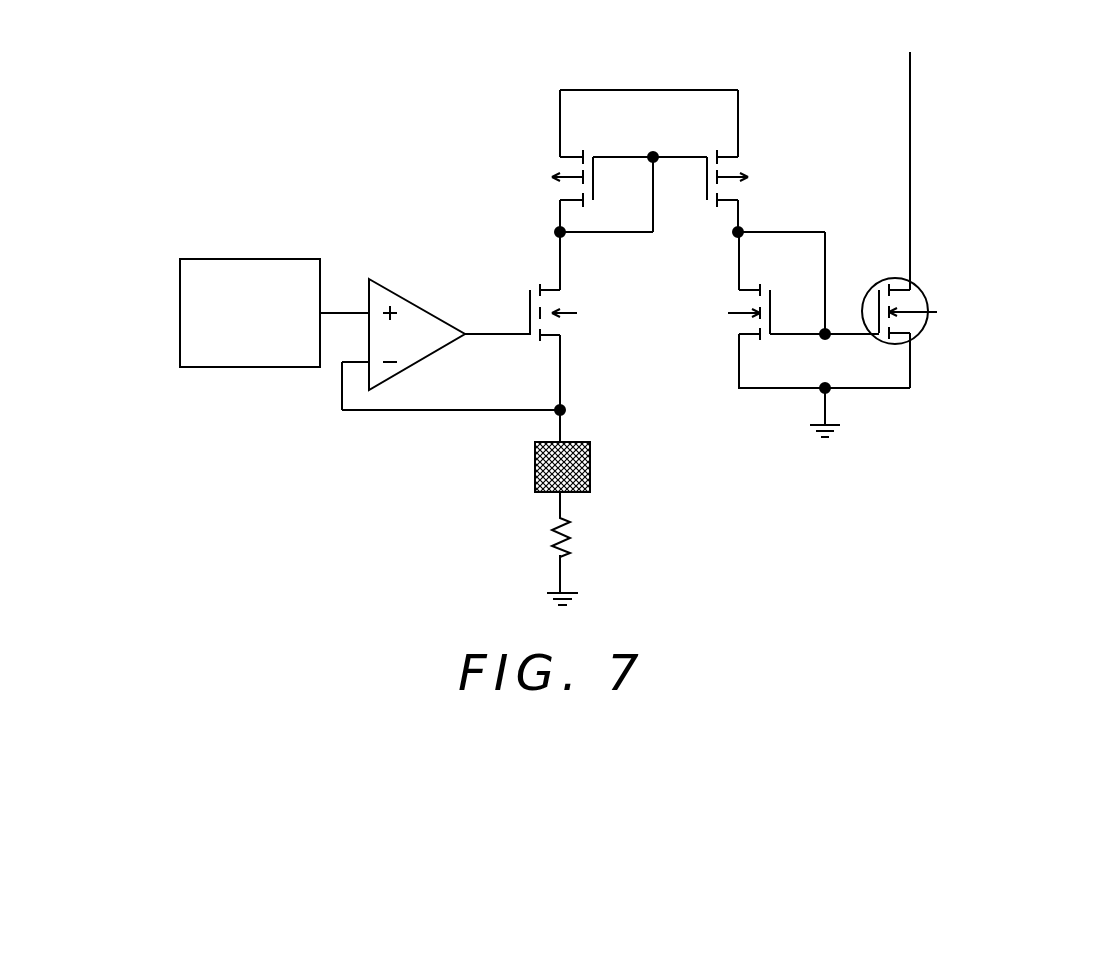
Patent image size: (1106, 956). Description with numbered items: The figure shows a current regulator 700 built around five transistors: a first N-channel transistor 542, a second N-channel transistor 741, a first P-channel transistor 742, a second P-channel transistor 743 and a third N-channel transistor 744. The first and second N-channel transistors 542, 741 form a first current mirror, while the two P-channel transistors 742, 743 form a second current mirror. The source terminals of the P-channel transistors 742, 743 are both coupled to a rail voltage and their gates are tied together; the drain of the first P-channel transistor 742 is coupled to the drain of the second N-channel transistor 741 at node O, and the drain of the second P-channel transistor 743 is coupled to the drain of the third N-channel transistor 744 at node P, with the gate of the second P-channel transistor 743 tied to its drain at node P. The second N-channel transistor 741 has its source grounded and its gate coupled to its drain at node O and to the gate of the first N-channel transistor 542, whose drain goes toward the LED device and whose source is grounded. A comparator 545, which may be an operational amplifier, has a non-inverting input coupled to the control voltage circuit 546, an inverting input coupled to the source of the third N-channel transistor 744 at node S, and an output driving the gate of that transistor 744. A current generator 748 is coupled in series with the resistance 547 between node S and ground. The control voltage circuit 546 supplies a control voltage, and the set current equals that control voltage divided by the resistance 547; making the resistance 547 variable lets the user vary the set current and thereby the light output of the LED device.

The current regulator 700 is at (216, 139).
The control voltage circuit 546 is at (273, 259).
The comparator 545 is at (408, 297).
The transistor NM3 744 is at (525, 312).
The transistor PM2 743 is at (545, 162).
The transistor PM1 742 is at (762, 162).
The transistor NM2 741 is at (777, 312).
The transistor NM1 542 is at (926, 305).
The current generator 748 is at (595, 467).
The resistance Rset 547 is at (548, 533).